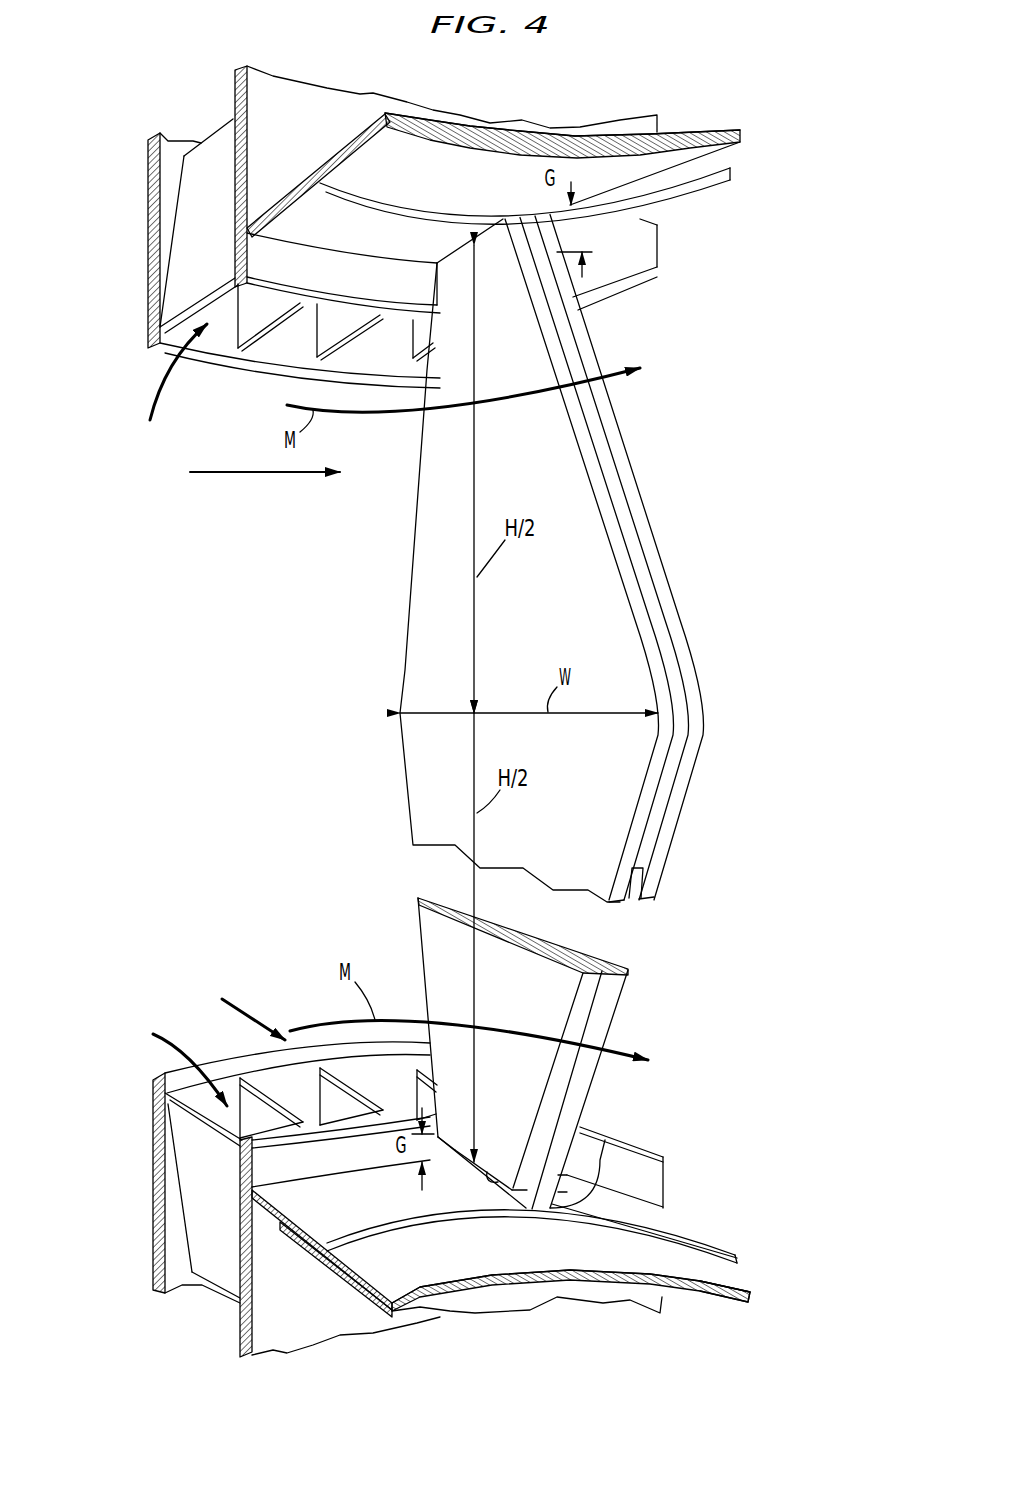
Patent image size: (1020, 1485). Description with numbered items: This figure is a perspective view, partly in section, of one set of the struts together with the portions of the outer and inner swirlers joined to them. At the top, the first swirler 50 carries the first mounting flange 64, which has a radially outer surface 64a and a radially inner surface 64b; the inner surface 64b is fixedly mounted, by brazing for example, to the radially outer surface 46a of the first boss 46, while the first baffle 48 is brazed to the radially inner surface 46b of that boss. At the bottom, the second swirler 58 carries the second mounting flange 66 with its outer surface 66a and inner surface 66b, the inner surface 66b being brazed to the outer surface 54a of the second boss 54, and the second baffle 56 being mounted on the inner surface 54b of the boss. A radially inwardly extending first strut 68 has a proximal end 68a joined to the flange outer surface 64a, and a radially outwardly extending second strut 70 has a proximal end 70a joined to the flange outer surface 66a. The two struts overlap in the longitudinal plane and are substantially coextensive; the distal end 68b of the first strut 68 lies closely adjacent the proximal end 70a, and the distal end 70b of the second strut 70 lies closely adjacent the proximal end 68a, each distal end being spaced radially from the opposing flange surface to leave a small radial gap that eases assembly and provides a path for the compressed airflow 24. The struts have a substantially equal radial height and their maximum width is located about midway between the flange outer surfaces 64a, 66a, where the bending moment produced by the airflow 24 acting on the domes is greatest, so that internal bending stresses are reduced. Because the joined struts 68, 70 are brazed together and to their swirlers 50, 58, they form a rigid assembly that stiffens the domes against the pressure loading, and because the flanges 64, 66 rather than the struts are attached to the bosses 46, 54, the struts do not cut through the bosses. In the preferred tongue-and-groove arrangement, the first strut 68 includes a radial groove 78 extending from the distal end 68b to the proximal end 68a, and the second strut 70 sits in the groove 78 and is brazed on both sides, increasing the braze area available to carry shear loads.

The compressed airflow 24 is at (215, 470).
The first boss 46 is at (594, 128).
The radially outer surface of first boss 46a is at (690, 163).
The radially inner surface of first boss 46b is at (725, 130).
The first baffle 48 is at (688, 133).
The first swirler 50 is at (148, 213).
The second boss 54 is at (571, 1312).
The radially outer surface of second boss 54a is at (580, 1253).
The radially inner surface of second boss 54b is at (727, 1305).
The second baffle 56 is at (435, 1311).
The second swirler 58 is at (152, 1162).
The first mounting flange 64 is at (680, 210).
The outer surface of first mounting flange 64a is at (638, 226).
The inner surface of first mounting flange 64b is at (263, 208).
The second mounting flange 66 is at (704, 1230).
The outer surface of second mounting flange 66a is at (672, 1215).
The inner surface of second mounting flange 66b is at (727, 1265).
The first strut 68 is at (415, 522).
The proximal end of first strut 68a is at (483, 237).
The distal end of first strut 68b is at (492, 1178).
The second strut 70 is at (635, 546).
The proximal end of second strut 70a is at (612, 1146).
The distal end of second strut 70b is at (536, 252).
The radial groove 78 is at (641, 890).